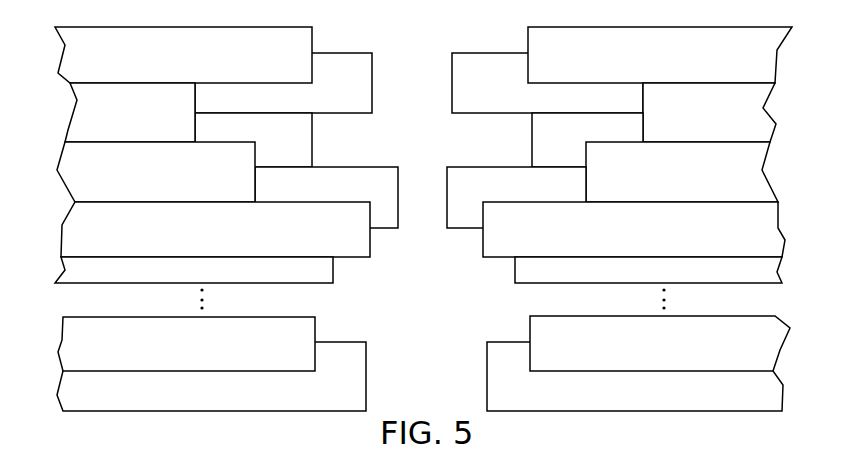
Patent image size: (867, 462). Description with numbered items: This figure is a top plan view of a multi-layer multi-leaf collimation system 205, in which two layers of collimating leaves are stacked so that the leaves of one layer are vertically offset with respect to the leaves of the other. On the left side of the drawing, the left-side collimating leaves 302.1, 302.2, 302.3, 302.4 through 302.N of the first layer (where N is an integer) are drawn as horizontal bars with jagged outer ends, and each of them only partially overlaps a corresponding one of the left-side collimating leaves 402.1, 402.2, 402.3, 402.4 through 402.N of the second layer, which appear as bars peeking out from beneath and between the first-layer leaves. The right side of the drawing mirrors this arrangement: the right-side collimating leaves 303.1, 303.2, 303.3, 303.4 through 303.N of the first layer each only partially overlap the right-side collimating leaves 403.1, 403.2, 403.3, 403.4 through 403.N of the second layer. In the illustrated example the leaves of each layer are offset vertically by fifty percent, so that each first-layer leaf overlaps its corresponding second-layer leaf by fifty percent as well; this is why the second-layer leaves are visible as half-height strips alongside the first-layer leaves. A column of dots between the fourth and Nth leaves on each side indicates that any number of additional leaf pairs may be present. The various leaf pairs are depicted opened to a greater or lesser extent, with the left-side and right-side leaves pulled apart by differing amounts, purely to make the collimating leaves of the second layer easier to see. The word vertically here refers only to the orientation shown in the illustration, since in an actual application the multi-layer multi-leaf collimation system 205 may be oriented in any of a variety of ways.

The multi-layer multi-leaf collimation system 205 is at (445, 378).
The left-side collimating leaf of the first layer 302.1 is at (165, 66).
The left-side collimating leaf of the first layer 302.2 is at (150, 123).
The left-side collimating leaf of the first layer 302.3 is at (156, 183).
The left-side collimating leaf of the first layer 302.4 is at (163, 240).
The left-side collimating leaf of the first layer 302.N is at (160, 353).
The left-side collimating leaf of the second layer 402.1 is at (281, 110).
The left-side collimating leaf of the second layer 402.2 is at (270, 138).
The left-side collimating leaf of the second layer 402.3 is at (326, 195).
The left-side collimating leaf of the second layer 402.4 is at (228, 280).
The left-side collimating leaf of the second layer 402.N is at (200, 400).
The right-side collimating leaf of the first layer 303.1 is at (638, 66).
The right-side collimating leaf of the first layer 303.2 is at (720, 123).
The right-side collimating leaf of the first layer 303.3 is at (683, 183).
The right-side collimating leaf of the first layer 303.4 is at (637, 240).
The right-side collimating leaf of the first layer 303.N is at (647, 355).
The right-side collimating leaf of the second layer 403.1 is at (508, 108).
The right-side collimating leaf of the second layer 403.2 is at (591, 140).
The right-side collimating leaf of the second layer 403.3 is at (506, 195).
The right-side collimating leaf of the second layer 403.4 is at (608, 280).
The right-side collimating leaf of the second layer 403.N is at (557, 400).